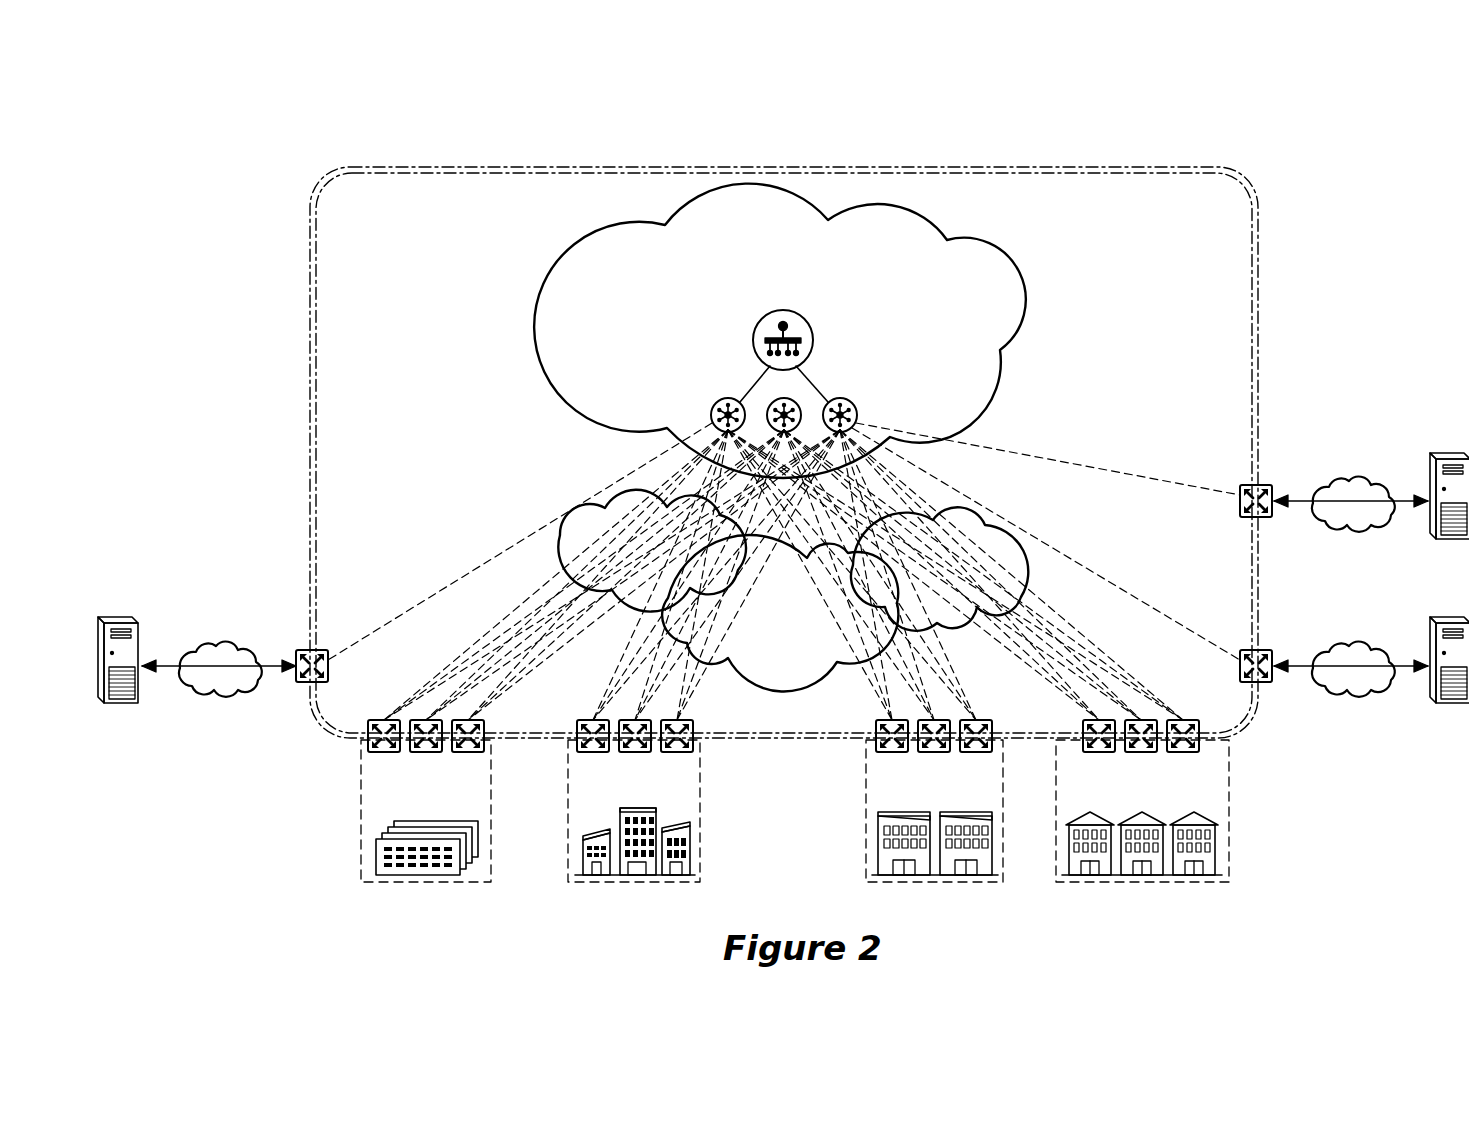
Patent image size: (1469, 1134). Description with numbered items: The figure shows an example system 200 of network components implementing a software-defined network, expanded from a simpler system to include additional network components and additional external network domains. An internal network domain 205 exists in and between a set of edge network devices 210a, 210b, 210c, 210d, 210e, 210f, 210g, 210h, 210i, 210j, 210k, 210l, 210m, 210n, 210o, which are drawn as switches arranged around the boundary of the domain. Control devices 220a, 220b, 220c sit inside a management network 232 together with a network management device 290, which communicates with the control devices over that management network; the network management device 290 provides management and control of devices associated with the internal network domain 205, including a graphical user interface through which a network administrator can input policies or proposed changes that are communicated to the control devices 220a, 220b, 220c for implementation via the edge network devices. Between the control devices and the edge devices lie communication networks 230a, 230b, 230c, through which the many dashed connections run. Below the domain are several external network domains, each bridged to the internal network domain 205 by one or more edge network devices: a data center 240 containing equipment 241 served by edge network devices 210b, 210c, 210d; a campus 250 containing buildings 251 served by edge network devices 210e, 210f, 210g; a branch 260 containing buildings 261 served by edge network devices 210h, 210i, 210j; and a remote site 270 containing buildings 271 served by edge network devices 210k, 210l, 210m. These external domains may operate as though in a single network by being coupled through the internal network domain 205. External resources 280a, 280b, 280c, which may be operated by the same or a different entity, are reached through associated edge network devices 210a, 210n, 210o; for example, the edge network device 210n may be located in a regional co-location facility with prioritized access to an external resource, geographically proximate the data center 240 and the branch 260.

The system 200 is at (1255, 126).
The internal network domain 205 is at (1262, 228).
The management network 232 is at (987, 232).
The network management device 290 is at (811, 333).
The control device 220a is at (712, 408).
The control device 220b is at (772, 403).
The control device 220c is at (855, 405).
The communication network 230a is at (557, 535).
The communication network 230b is at (803, 638).
The communication network 230c is at (1037, 535).
The edge network device 210a is at (312, 650).
The edge network device 210b is at (368, 748).
The edge network device 210c is at (426, 752).
The edge network device 210d is at (485, 745).
The edge network device 210e is at (577, 748).
The edge network device 210f is at (635, 752).
The edge network device 210g is at (695, 748).
The edge network device 210h is at (876, 748).
The edge network device 210i is at (934, 752).
The edge network device 210j is at (976, 752).
The edge network device 210k is at (1092, 752).
The edge network device 210l is at (1150, 752).
The edge network device 210m is at (1200, 746).
The edge network device 210n is at (1270, 650).
The edge network device 210o is at (1270, 485).
The external resource 280a is at (118, 617).
The external resource 280b is at (1450, 617).
The external resource 280c is at (1450, 453).
The data center 240 is at (455, 882).
The server racks 241 is at (390, 878).
The campus 250 is at (666, 882).
The campus buildings 251 is at (600, 878).
The branch 260 is at (976, 882).
The office buildings 261 is at (910, 878).
The remote site 270 is at (1195, 882).
The residential buildings 271 is at (1128, 878).